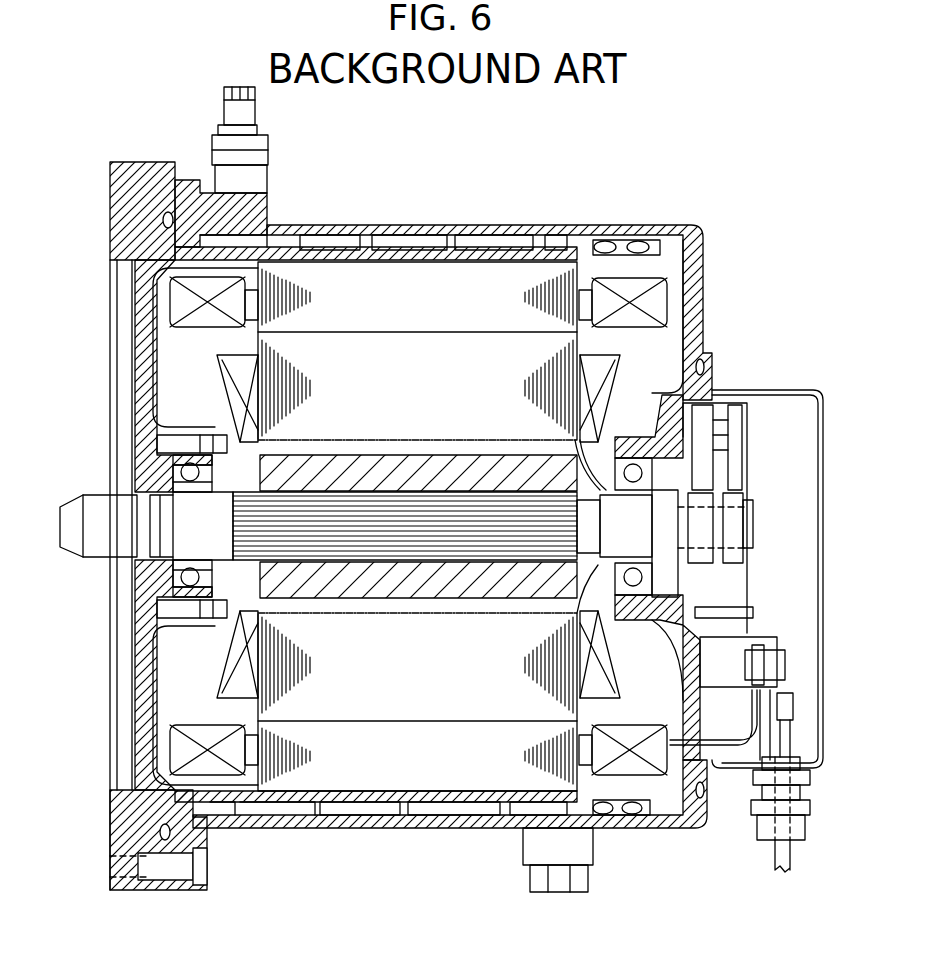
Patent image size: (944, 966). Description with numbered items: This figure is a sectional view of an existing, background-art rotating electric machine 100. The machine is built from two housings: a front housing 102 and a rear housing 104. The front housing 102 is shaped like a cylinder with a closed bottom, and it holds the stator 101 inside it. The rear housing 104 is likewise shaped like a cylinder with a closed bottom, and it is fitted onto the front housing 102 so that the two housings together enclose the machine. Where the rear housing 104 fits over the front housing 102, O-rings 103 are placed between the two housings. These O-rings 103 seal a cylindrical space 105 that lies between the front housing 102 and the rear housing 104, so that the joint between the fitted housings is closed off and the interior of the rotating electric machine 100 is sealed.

The rotating electric machine 100 is at (618, 132).
The stator 101 is at (432, 285).
The front housing 102 is at (138, 230).
The O-rings 103 is at (602, 815).
The rear housing 104 is at (703, 318).
The cylindrical space 105 is at (363, 810).